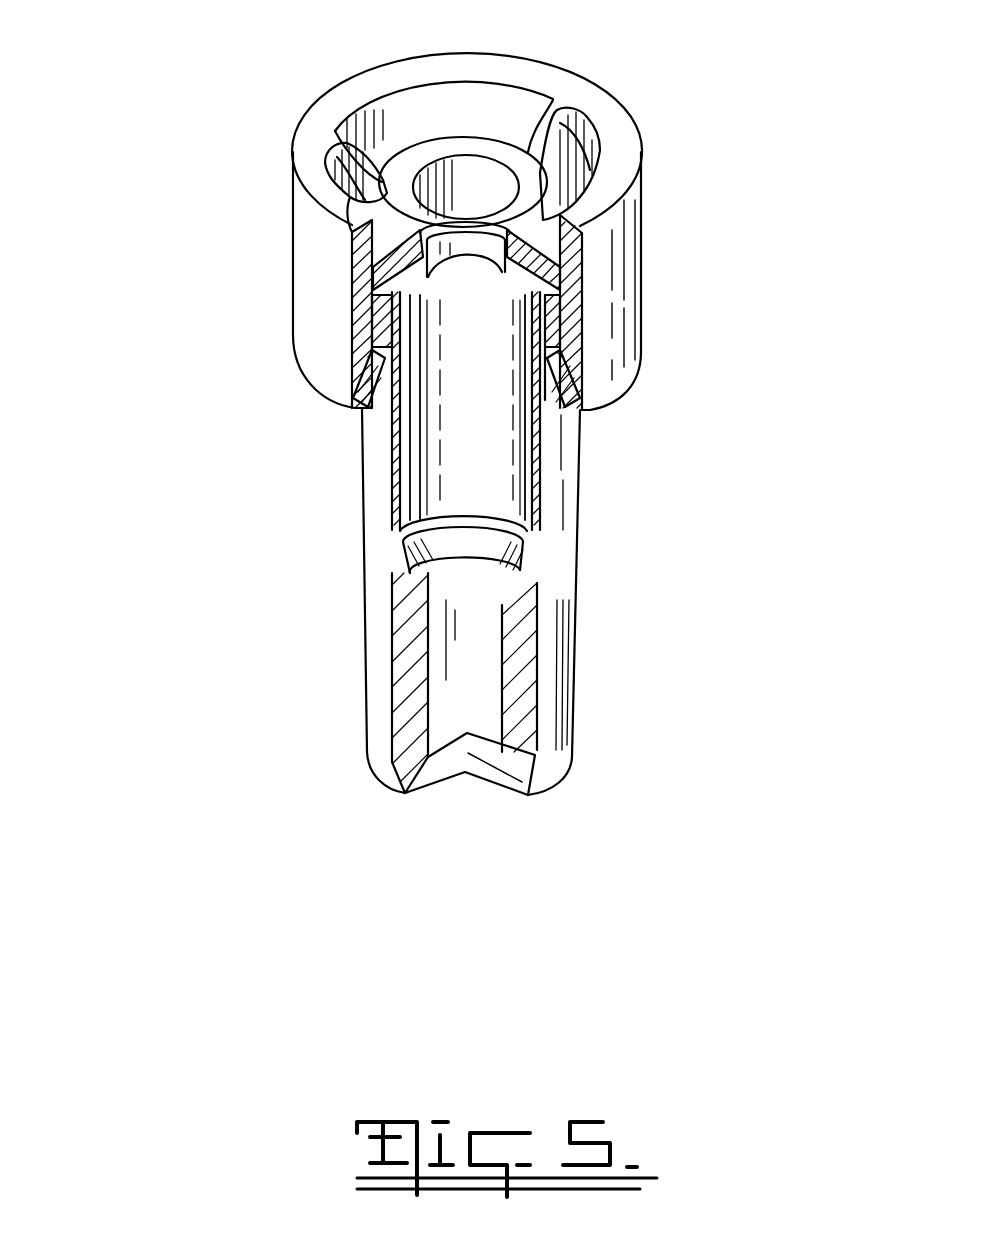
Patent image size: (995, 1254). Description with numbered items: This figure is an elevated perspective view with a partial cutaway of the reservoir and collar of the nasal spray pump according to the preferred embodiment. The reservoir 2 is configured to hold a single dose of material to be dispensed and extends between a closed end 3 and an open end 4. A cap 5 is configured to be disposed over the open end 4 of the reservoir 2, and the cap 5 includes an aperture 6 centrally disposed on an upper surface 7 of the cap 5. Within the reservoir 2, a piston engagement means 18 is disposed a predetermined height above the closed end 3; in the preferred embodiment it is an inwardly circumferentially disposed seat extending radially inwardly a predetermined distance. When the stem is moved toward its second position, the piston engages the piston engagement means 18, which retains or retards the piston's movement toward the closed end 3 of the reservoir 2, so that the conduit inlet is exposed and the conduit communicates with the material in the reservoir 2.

The reservoir 2 is at (313, 497).
The closed end 3 is at (478, 355).
The open end 4 is at (528, 795).
The cap 5 is at (642, 267).
The aperture 6 is at (436, 172).
The upper surface 7 is at (603, 157).
The piston engagement means 18 is at (490, 552).